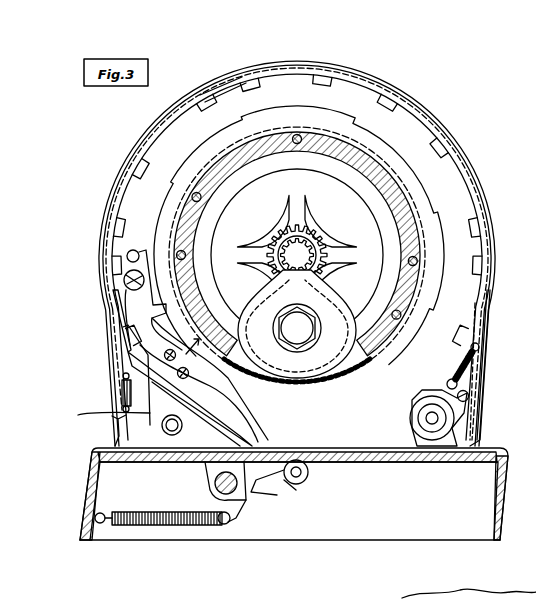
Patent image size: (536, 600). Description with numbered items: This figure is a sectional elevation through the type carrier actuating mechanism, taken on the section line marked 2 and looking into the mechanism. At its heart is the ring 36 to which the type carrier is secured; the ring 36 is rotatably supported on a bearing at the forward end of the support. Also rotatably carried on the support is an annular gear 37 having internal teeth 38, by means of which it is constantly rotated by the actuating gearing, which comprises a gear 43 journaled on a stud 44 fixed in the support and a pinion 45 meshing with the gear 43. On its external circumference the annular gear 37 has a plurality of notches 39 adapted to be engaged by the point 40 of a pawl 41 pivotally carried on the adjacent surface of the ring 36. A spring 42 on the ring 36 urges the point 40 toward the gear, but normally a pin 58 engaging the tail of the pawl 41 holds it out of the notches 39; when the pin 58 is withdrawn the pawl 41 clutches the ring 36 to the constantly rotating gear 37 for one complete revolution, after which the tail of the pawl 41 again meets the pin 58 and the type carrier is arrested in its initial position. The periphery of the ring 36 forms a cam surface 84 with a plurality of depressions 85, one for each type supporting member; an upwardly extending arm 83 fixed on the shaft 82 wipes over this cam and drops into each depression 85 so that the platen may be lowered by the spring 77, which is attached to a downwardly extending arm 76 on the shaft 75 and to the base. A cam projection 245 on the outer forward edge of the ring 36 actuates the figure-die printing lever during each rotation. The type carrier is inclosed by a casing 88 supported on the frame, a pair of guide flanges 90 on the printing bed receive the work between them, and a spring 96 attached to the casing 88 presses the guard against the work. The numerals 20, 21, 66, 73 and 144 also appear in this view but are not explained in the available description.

The section line 2 is at (294, 556).
The base 20 is at (380, 538).
The base wall 21 is at (434, 462).
The ring 36 is at (124, 197).
The annular gear 37 is at (156, 243).
The internal teeth 38 is at (262, 386).
The notches 39 is at (168, 300).
The point 40 is at (152, 313).
The pawl 41 is at (137, 269).
The spring 42 is at (152, 326).
The gear 43 is at (320, 360).
The stud 44 is at (301, 362).
The pinion 45 is at (328, 262).
The pin 58 is at (127, 257).
The frame 66 is at (168, 593).
The pivot 73 is at (285, 488).
The shaft 75 is at (216, 488).
The downwardly extending arm 76 is at (244, 526).
The spring 77 is at (152, 527).
The shaft 82 is at (170, 433).
The upwardly extending arm 83 is at (131, 364).
The cam surface 84 is at (130, 347).
The depressions 85 is at (117, 233).
The casing 88 is at (488, 346).
The guide flanges 90 is at (96, 449).
The spring 96 is at (112, 404).
The cover 144 is at (468, 598).
The cam projection 245 is at (237, 90).